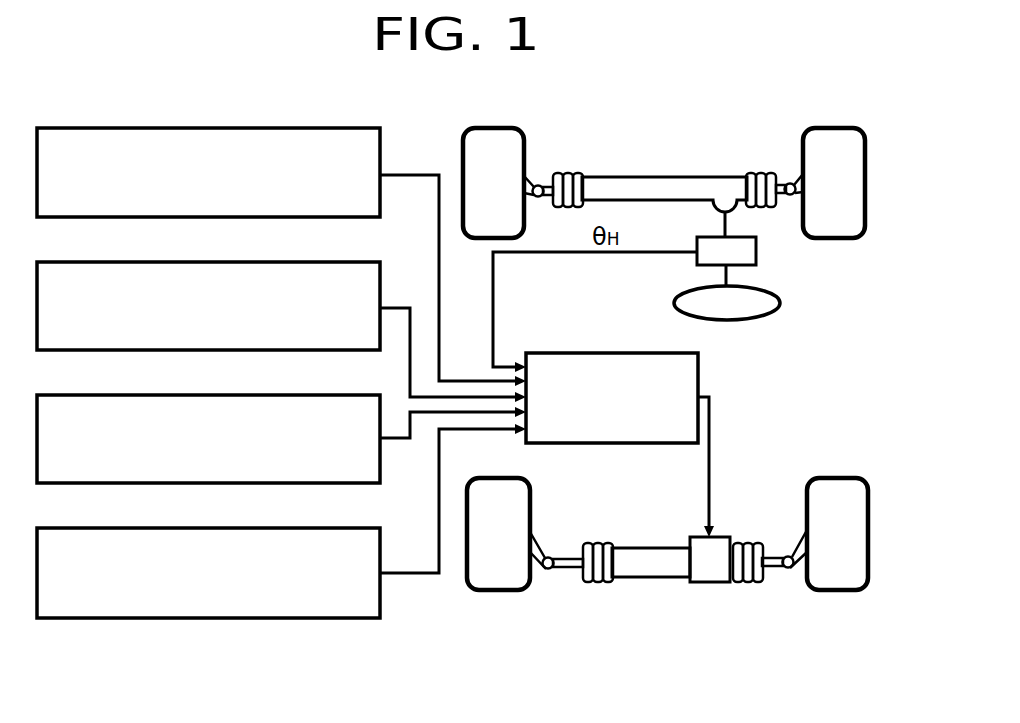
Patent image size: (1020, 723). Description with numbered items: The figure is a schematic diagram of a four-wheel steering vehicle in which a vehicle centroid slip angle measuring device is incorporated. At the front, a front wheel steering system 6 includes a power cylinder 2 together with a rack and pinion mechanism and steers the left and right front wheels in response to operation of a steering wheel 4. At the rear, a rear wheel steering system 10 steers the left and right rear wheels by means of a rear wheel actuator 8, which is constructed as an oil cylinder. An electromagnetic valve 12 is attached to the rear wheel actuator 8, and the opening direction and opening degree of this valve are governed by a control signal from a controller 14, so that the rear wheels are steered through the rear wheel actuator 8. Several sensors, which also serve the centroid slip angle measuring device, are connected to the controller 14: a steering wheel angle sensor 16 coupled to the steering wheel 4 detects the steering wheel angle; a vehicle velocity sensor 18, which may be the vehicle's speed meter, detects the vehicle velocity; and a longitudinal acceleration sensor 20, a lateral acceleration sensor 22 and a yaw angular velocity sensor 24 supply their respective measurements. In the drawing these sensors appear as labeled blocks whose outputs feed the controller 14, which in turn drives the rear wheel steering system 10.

The power cylinder 2 is at (641, 177).
The steering wheel 4 is at (780, 300).
The front wheel steering system 6 is at (663, 153).
The rear wheel actuator 8 is at (641, 577).
The rear wheel steering system 10 is at (668, 606).
The electromagnetic valve 12 is at (706, 582).
The controller 14 is at (698, 375).
The steering wheel angle sensor 16 is at (756, 250).
The vehicle velocity sensor 18 is at (75, 128).
The longitudinal acceleration sensor 20 is at (75, 262).
The lateral acceleration sensor 22 is at (75, 395).
The yaw angular velocity sensor 24 is at (75, 528).